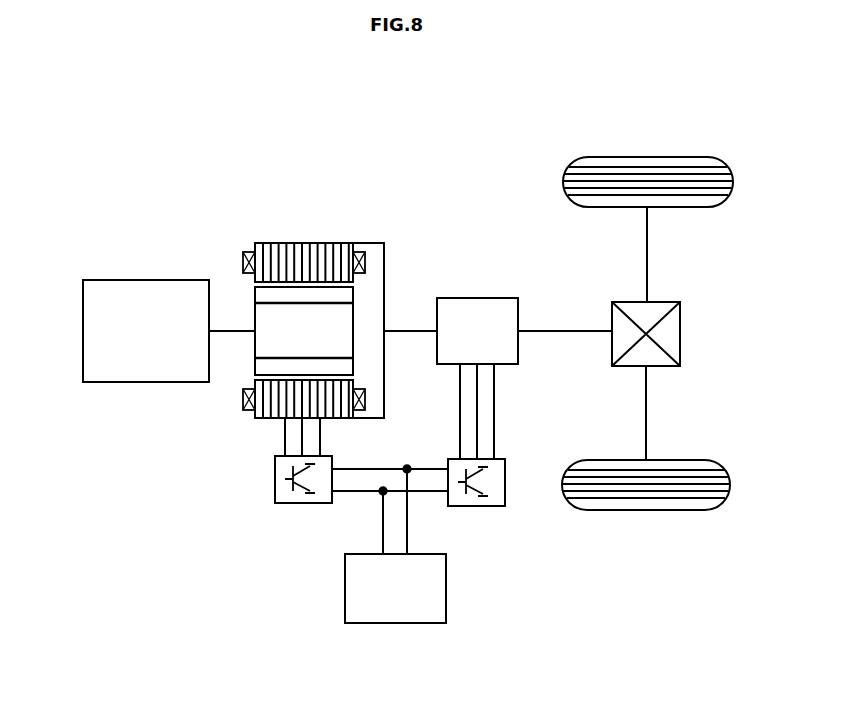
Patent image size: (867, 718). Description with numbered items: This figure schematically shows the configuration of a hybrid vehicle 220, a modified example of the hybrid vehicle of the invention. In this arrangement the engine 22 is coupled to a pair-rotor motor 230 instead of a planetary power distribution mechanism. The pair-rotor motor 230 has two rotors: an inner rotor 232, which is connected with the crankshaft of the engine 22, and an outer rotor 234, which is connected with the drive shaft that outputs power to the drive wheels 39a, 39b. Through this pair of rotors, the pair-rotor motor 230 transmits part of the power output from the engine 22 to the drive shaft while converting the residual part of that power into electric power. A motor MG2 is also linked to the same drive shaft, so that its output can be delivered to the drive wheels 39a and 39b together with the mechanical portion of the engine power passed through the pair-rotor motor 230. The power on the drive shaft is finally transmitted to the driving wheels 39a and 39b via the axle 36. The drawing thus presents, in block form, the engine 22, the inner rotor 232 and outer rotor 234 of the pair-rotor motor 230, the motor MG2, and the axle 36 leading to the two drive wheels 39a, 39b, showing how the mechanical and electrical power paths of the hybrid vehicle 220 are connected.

The engine 22 is at (147, 382).
The hybrid vehicle 220 is at (443, 134).
The pair-rotor motor 230 is at (242, 152).
The inner rotor 232 is at (255, 316).
The outer rotor 234 is at (305, 243).
The motor MG2 is at (478, 298).
The axle 36 is at (647, 243).
The drive wheel 39a is at (647, 157).
The drive wheel 39b is at (646, 510).